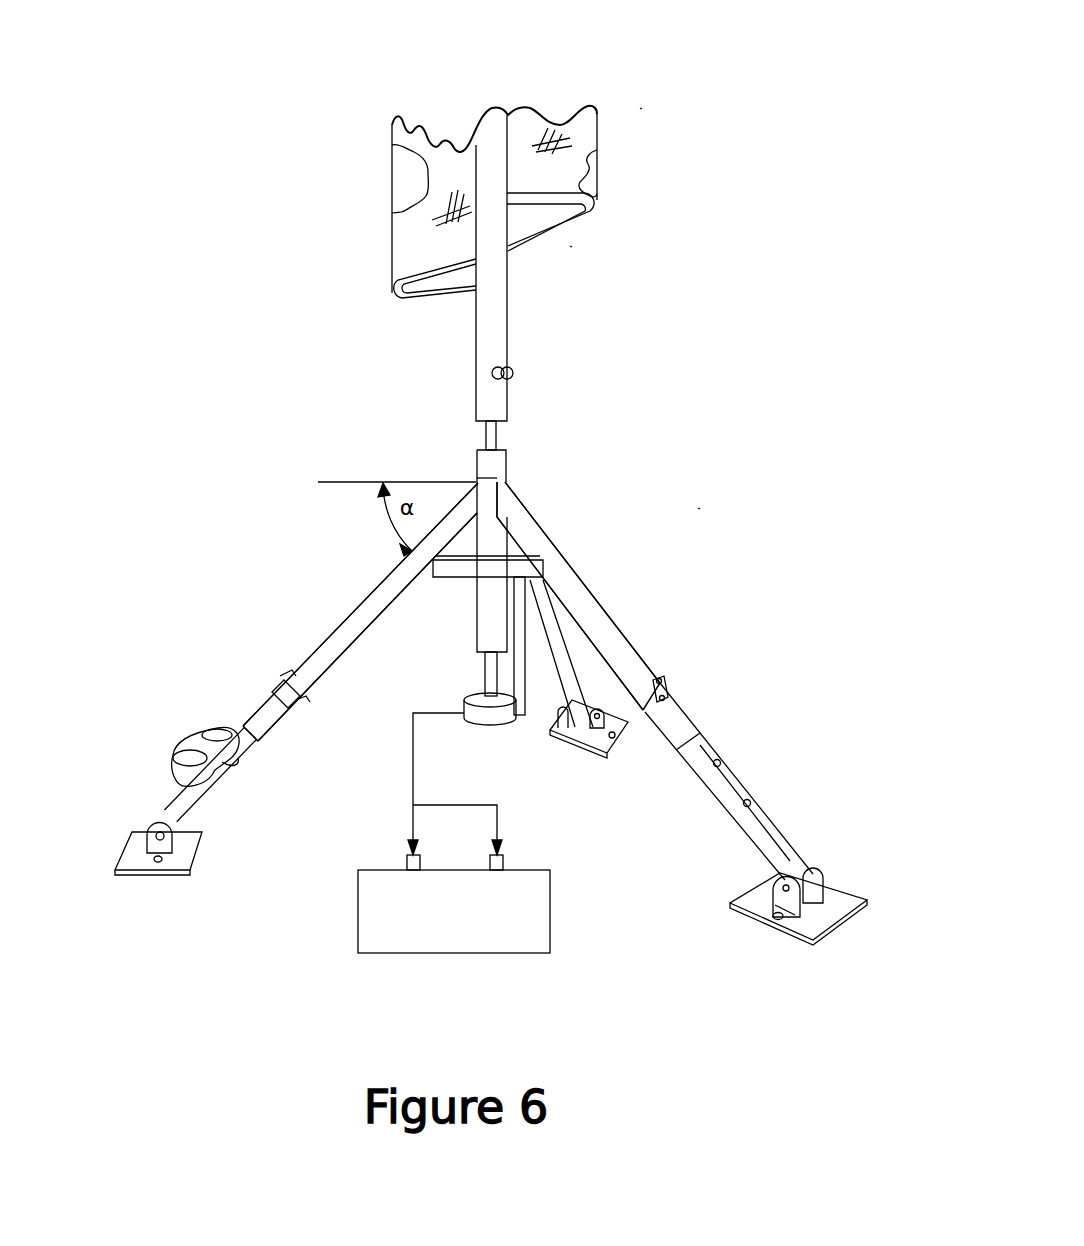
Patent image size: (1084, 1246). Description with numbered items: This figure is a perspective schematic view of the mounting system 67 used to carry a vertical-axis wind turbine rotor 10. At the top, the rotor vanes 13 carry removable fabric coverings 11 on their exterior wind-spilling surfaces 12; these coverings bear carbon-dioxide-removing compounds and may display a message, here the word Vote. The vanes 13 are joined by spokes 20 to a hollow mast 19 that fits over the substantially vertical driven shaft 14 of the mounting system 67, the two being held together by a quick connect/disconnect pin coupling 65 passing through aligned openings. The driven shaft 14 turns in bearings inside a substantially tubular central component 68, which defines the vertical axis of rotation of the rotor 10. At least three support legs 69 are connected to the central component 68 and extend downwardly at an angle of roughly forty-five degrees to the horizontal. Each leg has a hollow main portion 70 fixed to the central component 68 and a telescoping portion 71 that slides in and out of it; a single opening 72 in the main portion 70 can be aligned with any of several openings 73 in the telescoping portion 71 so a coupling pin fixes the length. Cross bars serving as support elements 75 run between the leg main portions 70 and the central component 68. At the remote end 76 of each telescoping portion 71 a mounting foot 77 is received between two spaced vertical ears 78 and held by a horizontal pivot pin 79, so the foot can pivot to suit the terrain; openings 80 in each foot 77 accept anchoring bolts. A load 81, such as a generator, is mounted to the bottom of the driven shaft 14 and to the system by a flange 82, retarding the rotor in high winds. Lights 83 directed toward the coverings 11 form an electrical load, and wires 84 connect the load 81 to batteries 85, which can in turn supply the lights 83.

The rotor 10 is at (637, 110).
The removable coverings 11 is at (416, 226).
The exterior surfaces 12 is at (534, 128).
The rotor vanes 13 is at (567, 245).
The driven shaft 14 is at (492, 437).
The mast 19 is at (480, 338).
The spokes 20 is at (520, 226).
The quick connect/disconnect pin coupling 65 is at (512, 376).
The mounting system 67 is at (695, 510).
The central component 68 is at (480, 460).
The support legs 69 is at (190, 667).
The main portion 70 is at (375, 622).
The telescoping portion 71 is at (549, 647).
The opening 72 is at (672, 680).
The openings 73 is at (722, 762).
The support elements 75 is at (448, 575).
The remote end 76 is at (135, 865).
The mounting feet 77 is at (115, 888).
The ears 78 is at (175, 842).
The pivot pin 79 is at (765, 897).
The openings 80 is at (165, 878).
The load 81 is at (495, 722).
The flange 82 is at (530, 700).
The lights 83 is at (175, 745).
The wires 84 is at (413, 770).
The batteries 85 is at (455, 953).